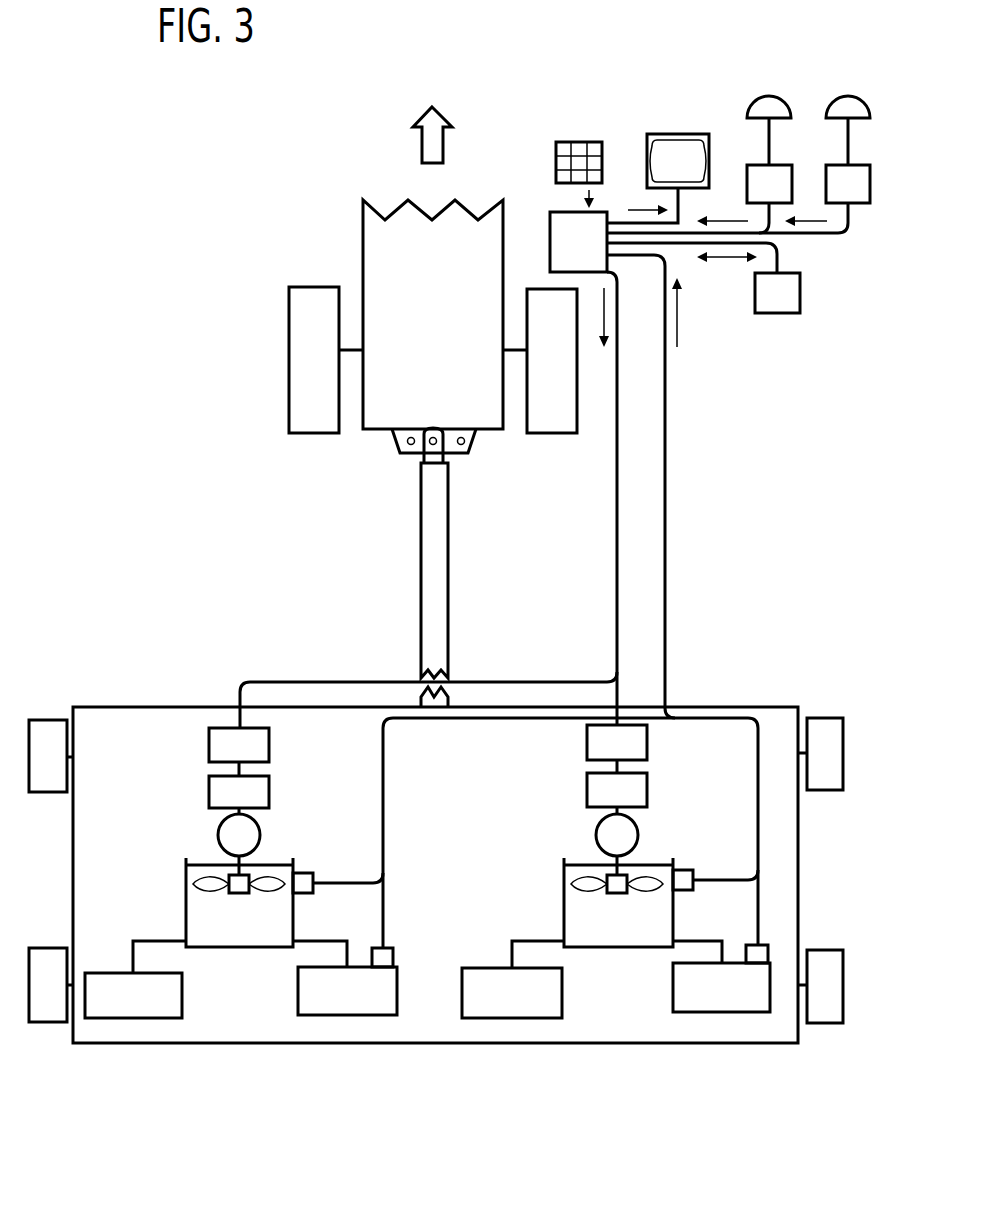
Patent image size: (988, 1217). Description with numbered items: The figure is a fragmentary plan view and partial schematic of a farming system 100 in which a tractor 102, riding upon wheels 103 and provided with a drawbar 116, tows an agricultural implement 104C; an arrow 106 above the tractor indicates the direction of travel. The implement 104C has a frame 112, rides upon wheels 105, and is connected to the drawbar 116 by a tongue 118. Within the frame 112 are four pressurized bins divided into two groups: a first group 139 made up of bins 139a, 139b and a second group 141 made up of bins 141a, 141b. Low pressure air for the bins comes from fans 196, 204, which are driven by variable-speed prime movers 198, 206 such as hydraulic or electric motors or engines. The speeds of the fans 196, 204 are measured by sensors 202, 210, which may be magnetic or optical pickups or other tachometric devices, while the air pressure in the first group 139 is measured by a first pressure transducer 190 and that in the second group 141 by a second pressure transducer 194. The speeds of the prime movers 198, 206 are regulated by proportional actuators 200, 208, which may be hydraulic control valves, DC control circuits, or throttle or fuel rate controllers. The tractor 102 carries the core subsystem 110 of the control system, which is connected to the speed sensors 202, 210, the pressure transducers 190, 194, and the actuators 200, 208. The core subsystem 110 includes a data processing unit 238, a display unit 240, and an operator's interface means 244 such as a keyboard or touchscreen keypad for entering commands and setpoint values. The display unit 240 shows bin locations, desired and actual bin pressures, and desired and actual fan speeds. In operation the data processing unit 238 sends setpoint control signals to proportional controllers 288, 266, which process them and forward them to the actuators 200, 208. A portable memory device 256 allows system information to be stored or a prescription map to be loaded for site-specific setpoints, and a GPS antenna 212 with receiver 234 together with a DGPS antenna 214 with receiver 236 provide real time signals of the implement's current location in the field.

The farming system 100 is at (147, 231).
The tractor 102 is at (363, 257).
The wheels 103 is at (289, 373).
The agricultural implement 104C is at (748, 580).
The wheels 105 is at (824, 790).
The direction of travel arrow 106 is at (490, 168).
The core subsystem 110 is at (683, 85).
The frame 112 is at (170, 706).
The drawbar 116 is at (392, 446).
The tongue 118 is at (421, 560).
The first group of bins 139 is at (205, 1055).
The bin 139a is at (110, 1010).
The bin 139b is at (324, 1005).
The second group of bins 141 is at (590, 1055).
The bin 141a is at (489, 1005).
The bin 141b is at (699, 1005).
The first pressure transducer 190 is at (392, 948).
The second pressure transducer 194 is at (768, 945).
The fan 196 is at (190, 883).
The prime mover 198 is at (261, 835).
The proportional actuator 200 is at (221, 805).
The speed sensor 202 is at (308, 872).
The fan 204 is at (563, 880).
The prime mover 206 is at (639, 835).
The proportional actuator 208 is at (599, 803).
The speed sensor 210 is at (684, 869).
The GPS antenna 212 is at (769, 96).
The DGPS antenna 214 is at (848, 96).
The GPS receiver 234 is at (751, 200).
The DGPS receiver 236 is at (830, 200).
The data processing unit 238 is at (597, 258).
The display unit 240 is at (660, 175).
The operator's interface means 244 is at (579, 143).
The portable memory device 256 is at (759, 307).
The proportional controller 266 is at (599, 755).
The proportional controller 288 is at (221, 757).